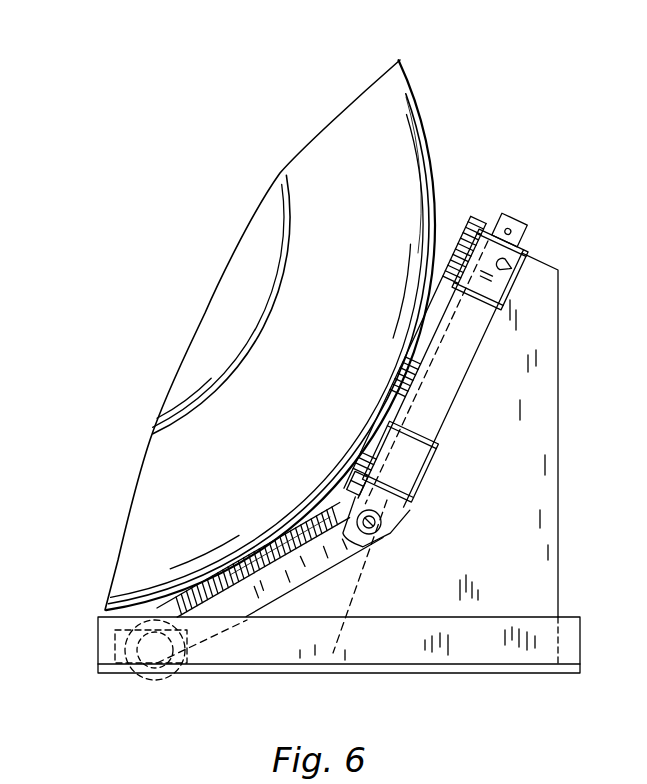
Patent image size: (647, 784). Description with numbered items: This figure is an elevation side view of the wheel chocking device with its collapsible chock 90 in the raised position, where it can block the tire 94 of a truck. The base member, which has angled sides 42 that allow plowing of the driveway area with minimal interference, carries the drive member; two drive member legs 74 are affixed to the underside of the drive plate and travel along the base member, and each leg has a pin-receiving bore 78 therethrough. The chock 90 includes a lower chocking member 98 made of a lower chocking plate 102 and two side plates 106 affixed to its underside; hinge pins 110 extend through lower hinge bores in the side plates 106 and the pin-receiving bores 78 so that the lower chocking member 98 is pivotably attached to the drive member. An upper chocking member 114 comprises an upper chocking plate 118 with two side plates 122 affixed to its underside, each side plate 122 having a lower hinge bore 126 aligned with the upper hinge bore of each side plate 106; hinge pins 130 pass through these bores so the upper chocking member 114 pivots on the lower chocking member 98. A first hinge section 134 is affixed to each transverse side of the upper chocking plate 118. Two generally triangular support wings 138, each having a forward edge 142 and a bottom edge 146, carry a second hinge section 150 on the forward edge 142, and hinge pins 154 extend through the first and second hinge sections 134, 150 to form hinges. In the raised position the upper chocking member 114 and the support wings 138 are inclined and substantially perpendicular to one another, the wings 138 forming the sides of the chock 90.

The angled sides 42 is at (510, 643).
The drive member legs 74 is at (117, 665).
The pin-receiving bore 78 is at (181, 673).
The collapsible chock 90 is at (536, 183).
The tire 94 is at (413, 80).
The lower chocking member 98 is at (289, 597).
The lower chocking plate 102 is at (342, 557).
The side plates 106 is at (295, 572).
The hinge pins 110 is at (157, 668).
The upper chocking member 114 is at (473, 222).
The upper chocking plate 118 is at (457, 263).
The side plates 122 is at (355, 497).
The lower hinge bore 126 is at (382, 520).
The hinge pins 130 is at (393, 532).
The first hinge section 134 is at (480, 291).
The support wings 138 is at (560, 320).
The forward edge 142 is at (512, 263).
The bottom edge 146 is at (450, 665).
The second hinge section 150 is at (442, 367).
The hinge pins 154 is at (515, 225).